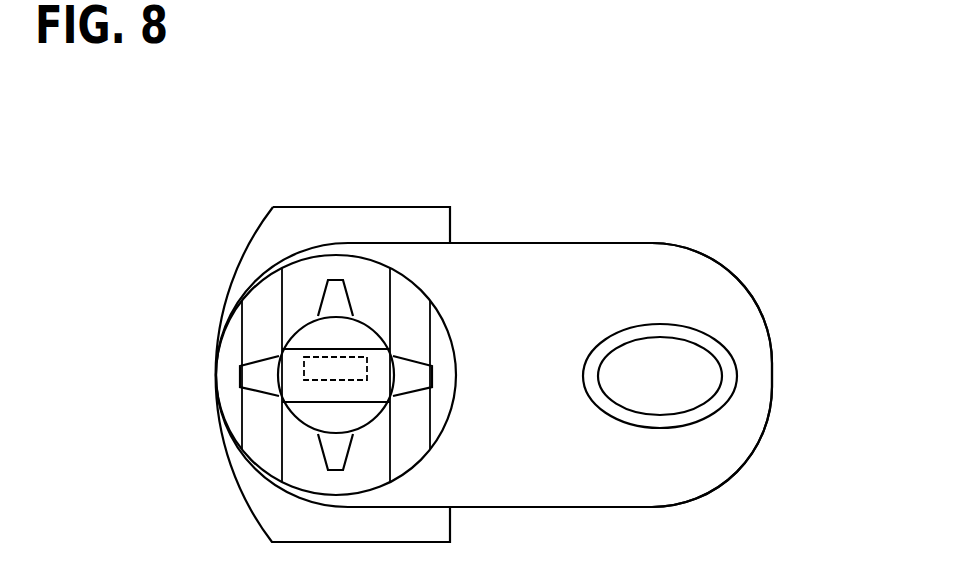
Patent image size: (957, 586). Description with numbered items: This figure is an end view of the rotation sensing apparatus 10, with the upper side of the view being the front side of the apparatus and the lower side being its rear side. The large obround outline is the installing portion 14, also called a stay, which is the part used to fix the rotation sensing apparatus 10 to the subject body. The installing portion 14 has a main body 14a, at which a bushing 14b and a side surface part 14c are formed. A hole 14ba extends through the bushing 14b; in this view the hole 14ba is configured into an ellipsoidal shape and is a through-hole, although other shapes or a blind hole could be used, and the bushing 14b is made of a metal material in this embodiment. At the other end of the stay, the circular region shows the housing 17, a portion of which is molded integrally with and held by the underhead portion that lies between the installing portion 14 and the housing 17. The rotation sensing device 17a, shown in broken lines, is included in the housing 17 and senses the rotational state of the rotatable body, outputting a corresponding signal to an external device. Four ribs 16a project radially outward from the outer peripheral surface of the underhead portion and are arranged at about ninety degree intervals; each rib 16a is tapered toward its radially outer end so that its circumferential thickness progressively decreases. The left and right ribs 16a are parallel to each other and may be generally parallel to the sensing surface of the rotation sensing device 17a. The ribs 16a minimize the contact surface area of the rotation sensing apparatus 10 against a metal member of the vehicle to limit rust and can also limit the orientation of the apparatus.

The rotation sensing apparatus 10 is at (195, 237).
The installing portion 14 is at (789, 201).
The main body 14a is at (453, 272).
The bushing 14b is at (662, 328).
The hole 14ba is at (713, 357).
The side surface part 14c is at (776, 376).
The ribs 16a is at (330, 452).
The housing 17 is at (338, 415).
The rotation sensing device 17a is at (337, 366).